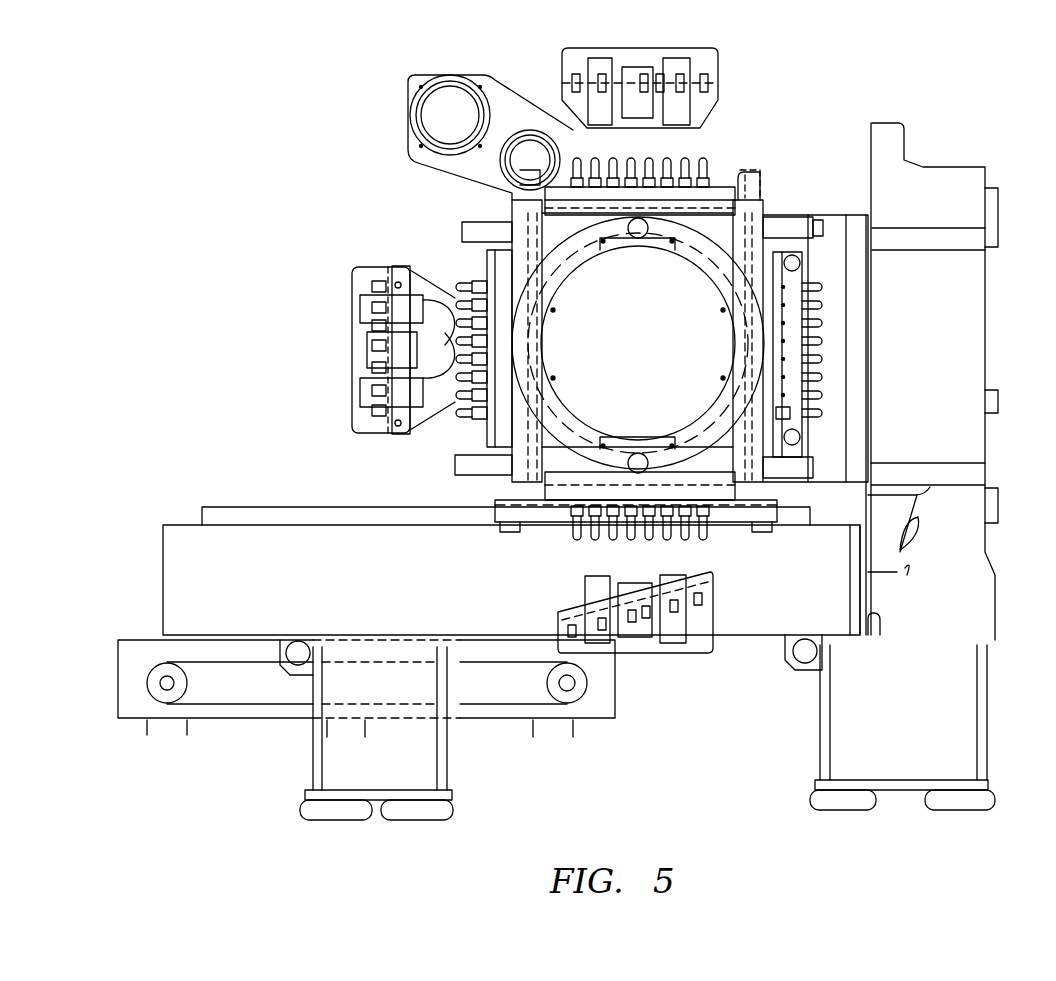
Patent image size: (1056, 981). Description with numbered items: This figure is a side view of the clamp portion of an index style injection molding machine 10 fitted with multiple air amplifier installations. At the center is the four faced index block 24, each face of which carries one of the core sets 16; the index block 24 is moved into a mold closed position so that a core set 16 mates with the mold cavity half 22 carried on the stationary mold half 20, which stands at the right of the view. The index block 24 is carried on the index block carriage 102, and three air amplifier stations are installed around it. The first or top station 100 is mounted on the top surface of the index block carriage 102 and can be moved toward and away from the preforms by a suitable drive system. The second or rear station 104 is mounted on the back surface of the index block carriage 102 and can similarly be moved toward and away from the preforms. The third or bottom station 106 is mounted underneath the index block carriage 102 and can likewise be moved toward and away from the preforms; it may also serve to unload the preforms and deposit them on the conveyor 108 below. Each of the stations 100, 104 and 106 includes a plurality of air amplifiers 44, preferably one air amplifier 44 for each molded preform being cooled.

The injection molding machine 10 is at (571, 423).
The core sets 16 is at (465, 282).
The stationary mold half 20 is at (838, 205).
The mold cavity half 22 is at (826, 222).
The index block 24 is at (654, 355).
The air amplifiers 44 is at (583, 160).
The first or top air amplifier station 100 is at (686, 48).
The index block carriage 102 is at (740, 197).
The second or rear air amplifier station 104 is at (352, 297).
The third or bottom air amplifier station 106 is at (645, 653).
The conveyor 108 is at (505, 650).